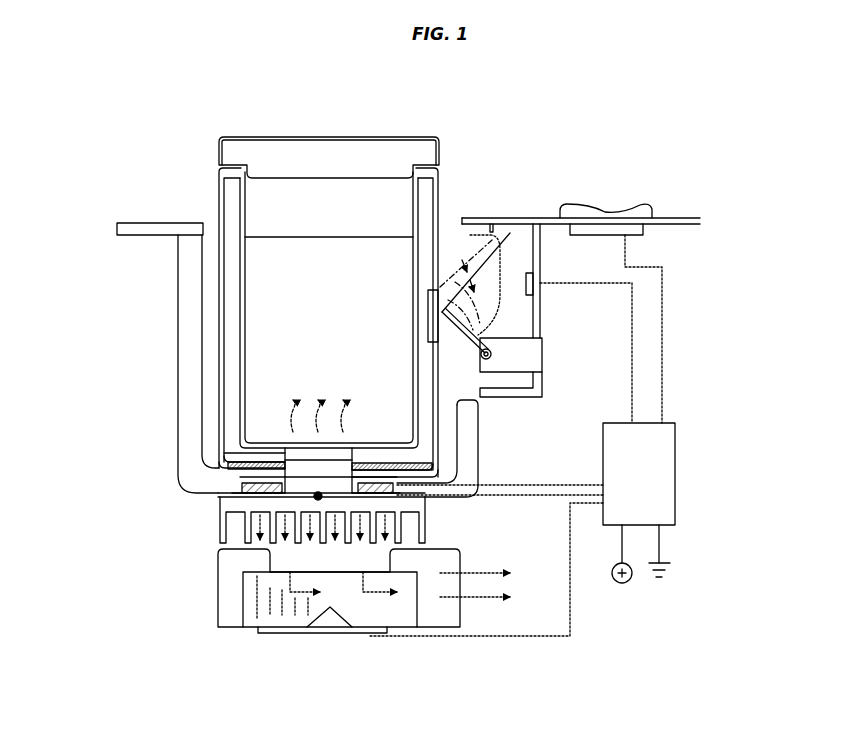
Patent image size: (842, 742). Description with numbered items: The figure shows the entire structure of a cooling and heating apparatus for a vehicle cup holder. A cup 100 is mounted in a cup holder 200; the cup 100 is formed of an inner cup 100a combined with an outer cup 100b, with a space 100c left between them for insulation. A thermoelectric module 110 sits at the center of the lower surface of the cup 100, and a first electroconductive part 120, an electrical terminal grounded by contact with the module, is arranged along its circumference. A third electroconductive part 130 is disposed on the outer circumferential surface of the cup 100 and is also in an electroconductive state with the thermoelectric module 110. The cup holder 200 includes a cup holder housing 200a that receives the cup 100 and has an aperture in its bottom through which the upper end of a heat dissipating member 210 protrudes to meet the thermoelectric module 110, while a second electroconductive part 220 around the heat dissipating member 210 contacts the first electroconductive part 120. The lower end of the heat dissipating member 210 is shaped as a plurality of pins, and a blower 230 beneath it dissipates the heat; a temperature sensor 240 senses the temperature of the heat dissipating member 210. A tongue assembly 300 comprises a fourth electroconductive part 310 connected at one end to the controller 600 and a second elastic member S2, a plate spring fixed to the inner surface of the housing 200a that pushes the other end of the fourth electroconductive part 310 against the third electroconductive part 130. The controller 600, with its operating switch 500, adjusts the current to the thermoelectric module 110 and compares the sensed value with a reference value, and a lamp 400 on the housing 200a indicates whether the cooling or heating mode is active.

The cup 100 is at (107, 136).
The inner cup 100a is at (235, 188).
The outer cup 100b is at (222, 197).
The space 100c is at (232, 217).
The thermoelectric module 110 is at (235, 462).
The first electroconductive part 120 is at (240, 486).
The third electroconductive part 130 is at (428, 312).
The cup holder 200 is at (165, 395).
The cup holder housing 200a is at (193, 357).
The heat dissipating member 210 is at (225, 502).
The second electroconductive part 220 is at (222, 494).
The blower 230 is at (233, 620).
The temperature sensor 240 is at (325, 497).
The tongue assembly 300 is at (545, 126).
The fourth electroconductive part 310 is at (502, 232).
The second elastic member S2 is at (482, 232).
The lamp 400 is at (540, 270).
The operating switch 500 is at (643, 210).
The controller 600 is at (676, 465).